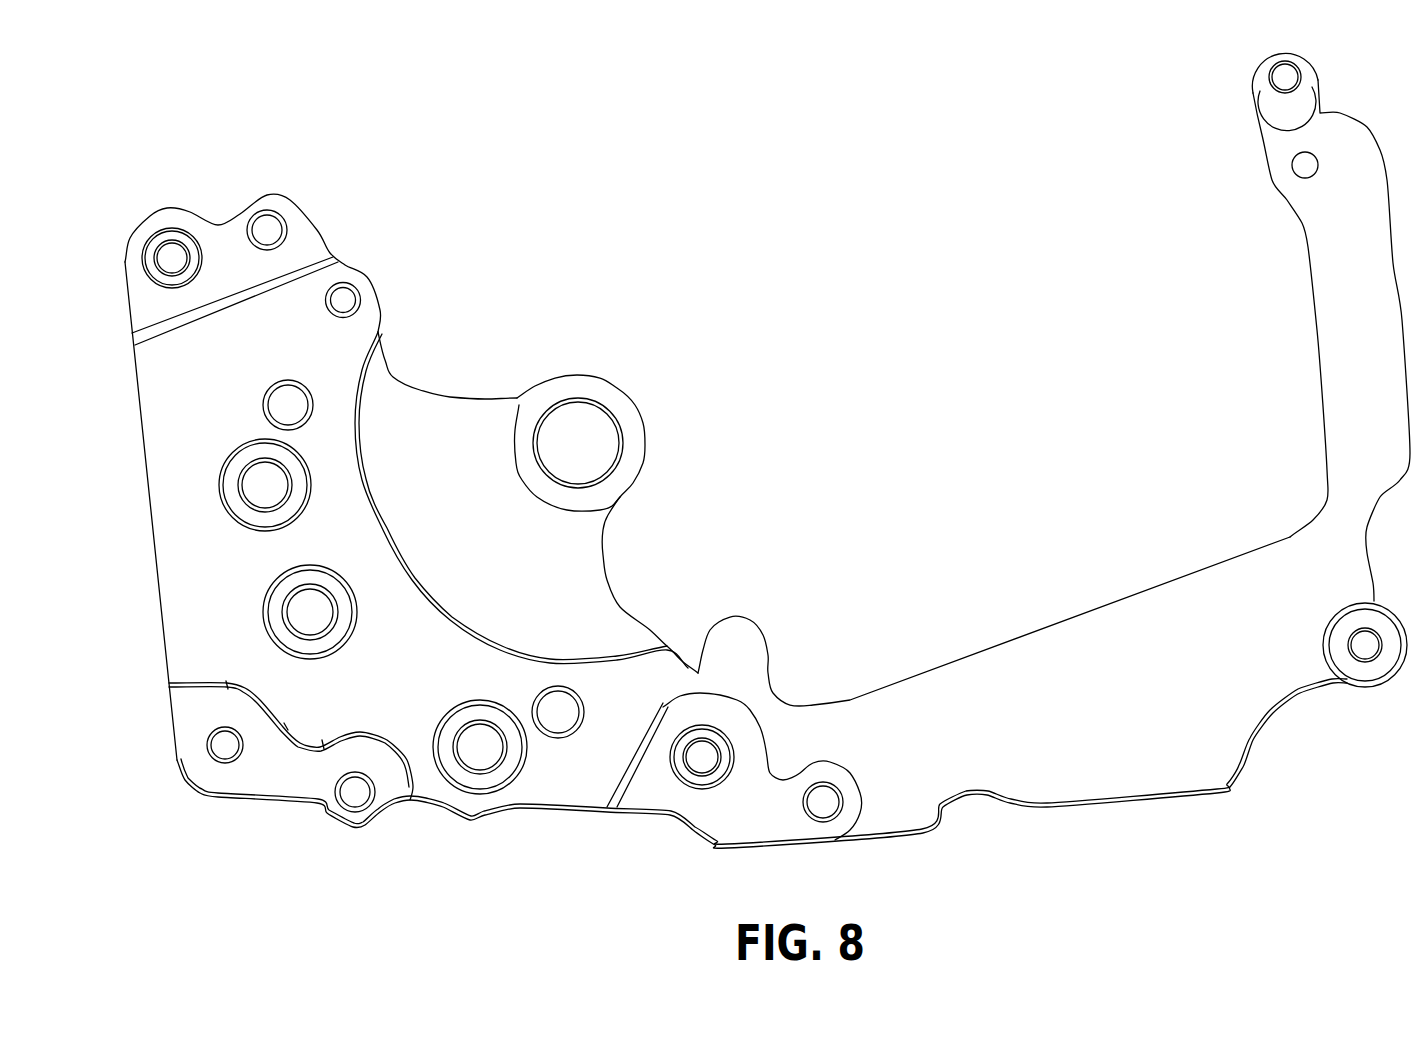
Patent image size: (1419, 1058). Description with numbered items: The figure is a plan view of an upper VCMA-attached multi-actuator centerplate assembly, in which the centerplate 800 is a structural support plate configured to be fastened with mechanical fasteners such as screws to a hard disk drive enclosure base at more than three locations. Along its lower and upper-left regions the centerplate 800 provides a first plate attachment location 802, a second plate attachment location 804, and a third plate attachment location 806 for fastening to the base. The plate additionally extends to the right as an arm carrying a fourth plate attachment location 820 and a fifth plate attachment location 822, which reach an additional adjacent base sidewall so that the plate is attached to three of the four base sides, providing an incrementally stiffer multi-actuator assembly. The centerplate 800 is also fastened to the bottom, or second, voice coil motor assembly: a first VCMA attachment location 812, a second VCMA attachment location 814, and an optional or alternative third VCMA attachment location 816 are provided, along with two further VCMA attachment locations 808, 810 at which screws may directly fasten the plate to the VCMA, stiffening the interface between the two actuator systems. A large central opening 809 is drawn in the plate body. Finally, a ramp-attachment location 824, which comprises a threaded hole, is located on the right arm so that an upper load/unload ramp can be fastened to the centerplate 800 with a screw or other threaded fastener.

The centerplate 800 is at (313, 128).
The first plate attachment location 802 is at (825, 805).
The second plate attachment location 804 is at (268, 226).
The third plate attachment location 806 is at (355, 793).
The VCMA attachment location 808 is at (482, 752).
The central aperture 809 is at (595, 422).
The VCMA attachment location 810 is at (262, 485).
The first VCMA attachment location 812 is at (703, 753).
The second VCMA attachment location 814 is at (172, 250).
The third VCMA attachment location 816 is at (228, 747).
The fourth plate attachment location 820 is at (1367, 647).
The fifth plate attachment location 822 is at (1288, 75).
The ramp-attachment location 824 is at (1305, 163).